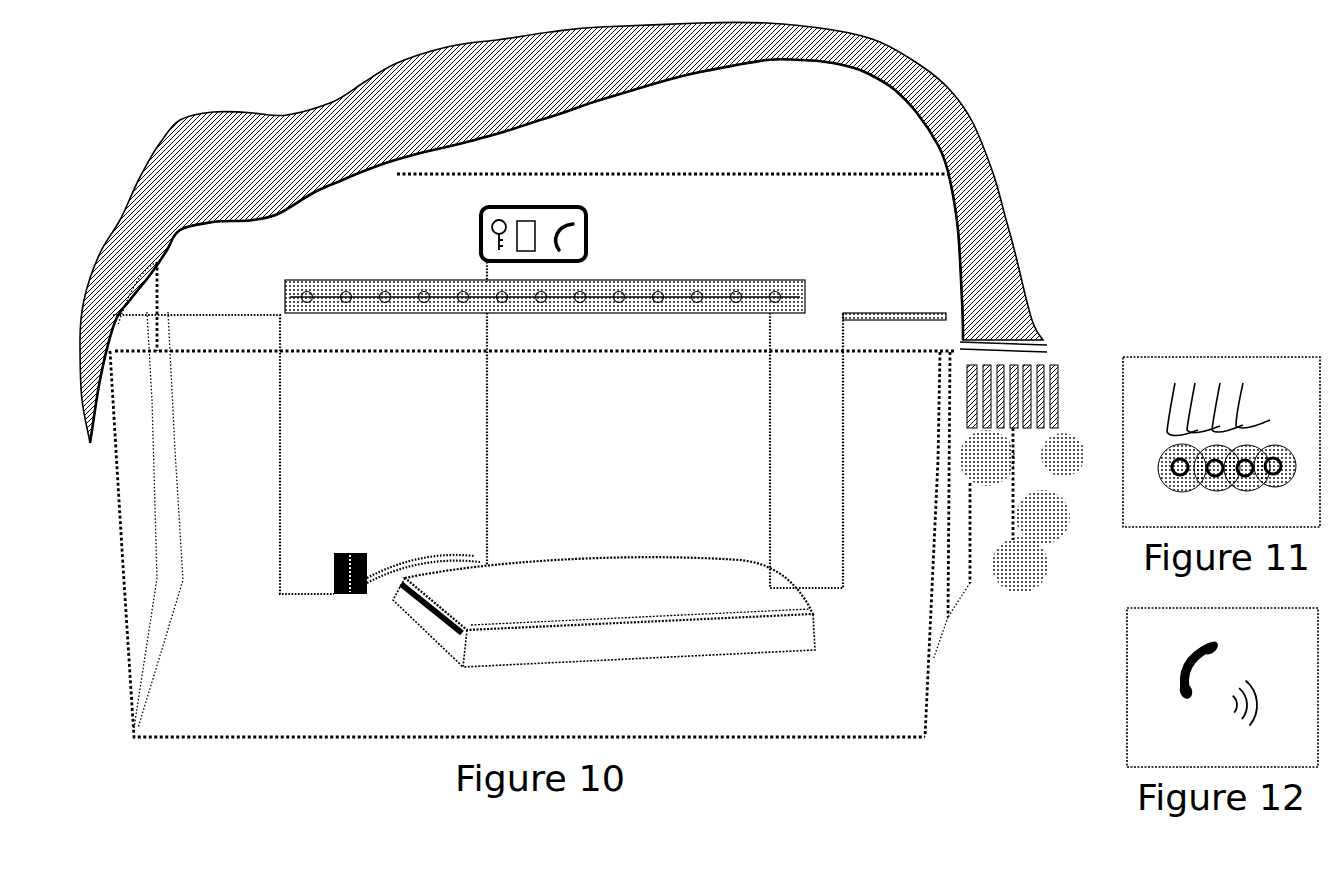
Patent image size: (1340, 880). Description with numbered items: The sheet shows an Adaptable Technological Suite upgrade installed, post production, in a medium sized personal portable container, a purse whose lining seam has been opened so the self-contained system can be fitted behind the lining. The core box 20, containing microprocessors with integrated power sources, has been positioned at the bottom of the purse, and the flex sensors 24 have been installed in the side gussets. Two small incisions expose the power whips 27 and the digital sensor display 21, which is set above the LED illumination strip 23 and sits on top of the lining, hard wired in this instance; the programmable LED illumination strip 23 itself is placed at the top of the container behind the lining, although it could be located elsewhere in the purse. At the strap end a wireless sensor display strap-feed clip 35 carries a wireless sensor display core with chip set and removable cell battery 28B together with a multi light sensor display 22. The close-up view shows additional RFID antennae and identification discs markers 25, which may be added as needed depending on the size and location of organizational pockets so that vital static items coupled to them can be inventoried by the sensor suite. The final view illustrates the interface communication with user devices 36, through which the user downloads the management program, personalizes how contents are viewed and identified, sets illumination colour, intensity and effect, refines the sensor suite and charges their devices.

In FIG. 10, the core box 20 is at (691, 602).
In FIG. 10, the digital sensor display 21 is at (592, 233).
In FIG. 10, the multi light sensor display 22 is at (1042, 547).
In FIG. 10, the LED illumination strip 23 is at (801, 289).
In FIG. 10, the flex sensor 24 is at (146, 302).
In FIG. 11, the RFID antennae and identification discs markers 25 is at (1212, 438).
In FIG. 10, the power connector whips 27 is at (350, 552).
In FIG. 10, the wireless sensor display core with chip set and removable cell battery 28B is at (1056, 385).
In FIG. 10, the wireless sensor display strap-feed clip 35 is at (1045, 351).
In FIG. 12, the interface communication with user devices 36 is at (1207, 671).